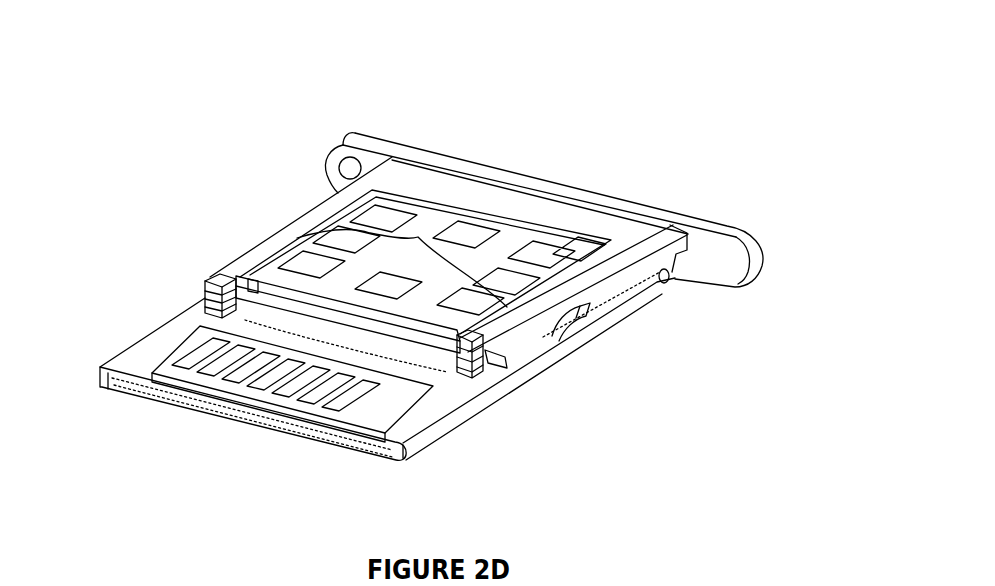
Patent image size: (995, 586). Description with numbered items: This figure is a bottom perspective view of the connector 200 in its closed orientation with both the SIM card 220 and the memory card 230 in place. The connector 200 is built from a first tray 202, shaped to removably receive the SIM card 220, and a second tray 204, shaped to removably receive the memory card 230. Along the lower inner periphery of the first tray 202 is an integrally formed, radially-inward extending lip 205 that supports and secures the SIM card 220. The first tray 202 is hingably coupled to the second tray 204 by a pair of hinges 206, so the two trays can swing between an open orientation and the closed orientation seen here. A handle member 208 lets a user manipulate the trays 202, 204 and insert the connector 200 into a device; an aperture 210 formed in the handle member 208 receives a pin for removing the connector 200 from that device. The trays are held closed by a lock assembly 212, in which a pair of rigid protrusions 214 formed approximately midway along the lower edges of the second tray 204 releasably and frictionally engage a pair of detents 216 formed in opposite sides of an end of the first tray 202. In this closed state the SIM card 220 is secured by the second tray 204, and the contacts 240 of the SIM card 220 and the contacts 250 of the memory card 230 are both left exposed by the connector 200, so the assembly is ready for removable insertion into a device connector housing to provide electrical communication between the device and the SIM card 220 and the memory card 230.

The connector 200 is at (766, 101).
The first tray 202 is at (287, 222).
The second tray 204 is at (487, 393).
The radially-inward extending lip 205 is at (418, 237).
The hinges 206 is at (666, 284).
The handle member 208 is at (727, 227).
The aperture 210 is at (356, 172).
The lock assembly 212 is at (205, 266).
The rigid protrusions 214 is at (458, 369).
The detents 216 is at (508, 366).
The SIM card 220 is at (513, 247).
The memory card 230 is at (222, 390).
The contacts of the SIM card 240 is at (510, 276).
The contacts of the memory card 250 is at (328, 397).